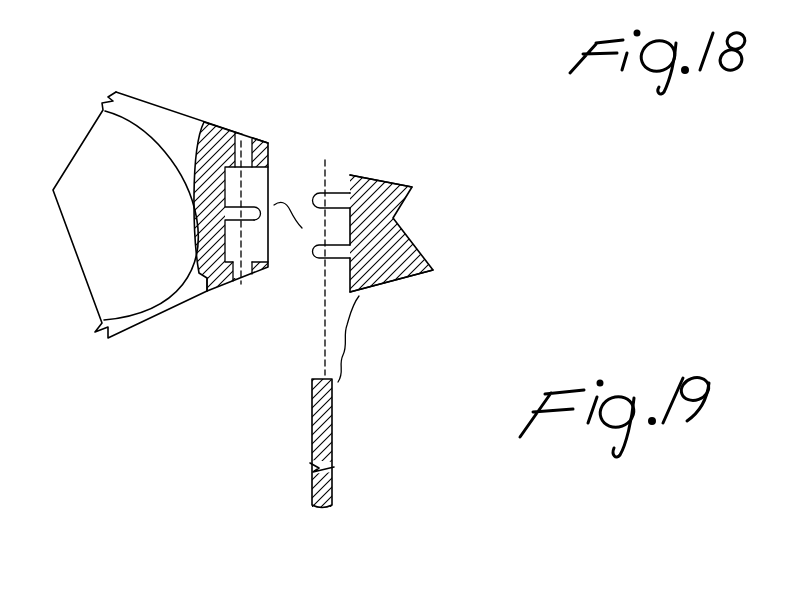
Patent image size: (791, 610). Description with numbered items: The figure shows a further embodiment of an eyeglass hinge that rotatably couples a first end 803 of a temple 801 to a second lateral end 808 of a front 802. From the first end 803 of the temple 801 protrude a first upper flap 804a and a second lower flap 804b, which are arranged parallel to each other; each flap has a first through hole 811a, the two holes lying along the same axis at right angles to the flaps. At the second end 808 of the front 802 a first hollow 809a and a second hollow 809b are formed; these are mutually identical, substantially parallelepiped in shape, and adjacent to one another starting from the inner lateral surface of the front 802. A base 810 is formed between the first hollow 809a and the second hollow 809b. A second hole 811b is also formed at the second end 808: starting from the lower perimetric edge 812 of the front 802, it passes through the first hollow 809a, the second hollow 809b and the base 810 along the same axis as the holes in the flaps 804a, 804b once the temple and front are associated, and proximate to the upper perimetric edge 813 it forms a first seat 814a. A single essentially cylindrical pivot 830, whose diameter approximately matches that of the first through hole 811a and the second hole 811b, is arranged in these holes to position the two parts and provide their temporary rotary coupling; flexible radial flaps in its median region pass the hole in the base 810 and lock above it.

The temple 801 is at (395, 199).
The front 802 is at (137, 114).
The first end 803 is at (346, 169).
The first upper flap 804a is at (313, 194).
The second lower flap 804b is at (323, 286).
The second lateral end 808 is at (272, 158).
The first hollow 809a is at (260, 188).
The second hollow 809b is at (260, 245).
The base 810 is at (280, 222).
The first through hole 811a is at (317, 252).
The second hole 811b is at (207, 296).
The lower perimetric edge 812 is at (233, 283).
The upper perimetric edge 813 is at (163, 107).
The first seat 814a is at (241, 156).
The pivot 830 is at (332, 440).